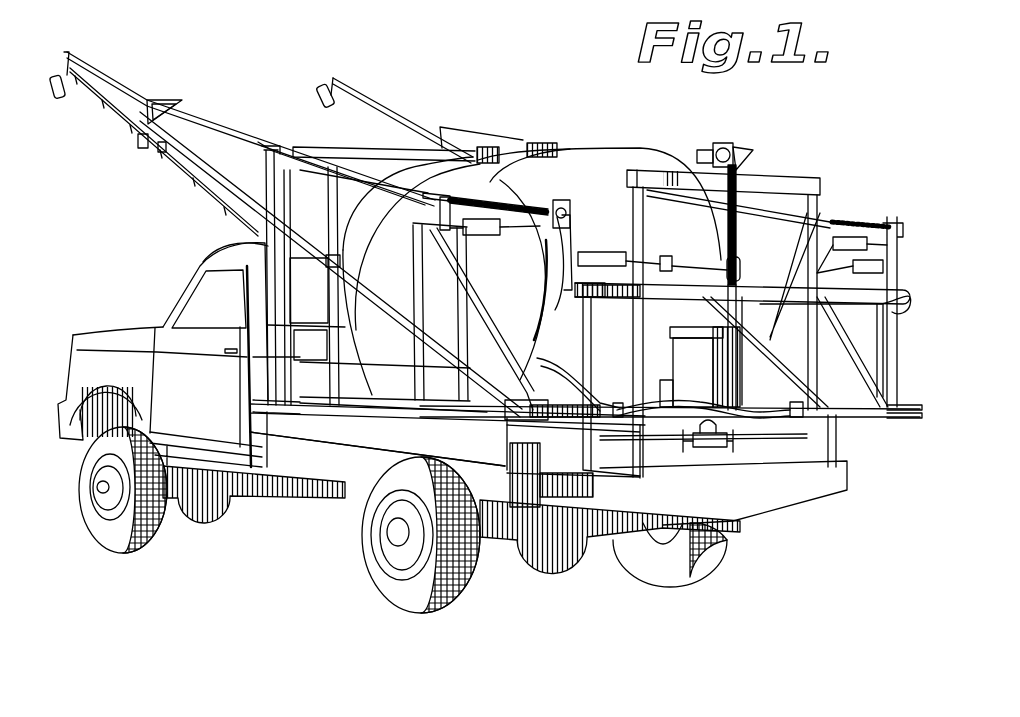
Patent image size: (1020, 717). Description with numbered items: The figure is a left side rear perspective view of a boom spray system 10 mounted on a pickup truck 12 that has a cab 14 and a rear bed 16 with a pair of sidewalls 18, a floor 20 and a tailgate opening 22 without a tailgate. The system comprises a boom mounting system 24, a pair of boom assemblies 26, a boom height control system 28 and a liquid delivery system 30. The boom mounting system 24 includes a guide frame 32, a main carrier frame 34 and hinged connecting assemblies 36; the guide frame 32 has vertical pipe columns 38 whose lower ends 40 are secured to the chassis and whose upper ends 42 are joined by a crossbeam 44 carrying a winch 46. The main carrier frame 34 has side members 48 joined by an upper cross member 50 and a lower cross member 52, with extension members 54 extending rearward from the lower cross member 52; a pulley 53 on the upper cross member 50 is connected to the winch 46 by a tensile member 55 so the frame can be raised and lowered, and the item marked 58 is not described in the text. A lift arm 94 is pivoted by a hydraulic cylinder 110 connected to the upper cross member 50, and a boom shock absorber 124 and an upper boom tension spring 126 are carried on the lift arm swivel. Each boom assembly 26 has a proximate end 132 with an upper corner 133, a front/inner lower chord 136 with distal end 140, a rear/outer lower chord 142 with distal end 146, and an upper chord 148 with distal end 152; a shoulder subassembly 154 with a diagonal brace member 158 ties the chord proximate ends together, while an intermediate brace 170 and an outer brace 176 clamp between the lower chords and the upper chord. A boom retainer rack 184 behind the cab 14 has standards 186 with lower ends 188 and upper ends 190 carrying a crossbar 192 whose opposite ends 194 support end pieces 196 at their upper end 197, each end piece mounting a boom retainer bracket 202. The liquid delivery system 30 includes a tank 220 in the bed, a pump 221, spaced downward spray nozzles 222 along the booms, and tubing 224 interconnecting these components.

The boom spray system 10 is at (774, 118).
The pickup truck 12 is at (78, 337).
The cab 14 is at (217, 247).
The rear bed 16 is at (323, 434).
The sidewalls 18 is at (385, 393).
The floor 20 is at (432, 407).
The tailgate opening 22 is at (511, 372).
The boom mounting system 24 is at (507, 460).
The boom assemblies 26 is at (76, 50).
The boom height control system 28 is at (126, 141).
The liquid delivery system 30 is at (643, 151).
The guide frame 32 is at (822, 182).
The main carrier frame 34 is at (882, 308).
The hinged connecting assemblies 36 is at (887, 206).
The pipe columns 38 is at (807, 448).
The lower ends 40 is at (812, 470).
The upper ends 42 is at (824, 201).
The crossbeam 44 is at (782, 178).
The winch 46 is at (725, 142).
The side members 48 is at (584, 364).
The upper cross member 50 is at (765, 288).
The lower cross member 52 is at (850, 418).
The pulley 53 is at (727, 262).
The extension members 54 is at (616, 430).
The tensile member 55 is at (727, 207).
The foot bracket 58 is at (912, 414).
The lift arm 94 is at (572, 211).
The hydraulic cylinder 110 is at (626, 258).
The boom shock absorber 124 is at (480, 234).
The upper boom tension spring 126 is at (512, 203).
The proximate end 132 is at (484, 314).
The upper corner 133 is at (463, 178).
The front/inner lower chord 136 is at (327, 307).
The distal end 140 is at (185, 107).
The rear/outer lower chord 142 is at (181, 170).
The distal end 146 is at (92, 72).
The upper chord 148 is at (228, 122).
The distal end 152 is at (150, 102).
The shoulder subassembly 154 is at (420, 256).
The diagonal brace member 158 is at (468, 278).
The intermediate brace 170 is at (268, 173).
The outer brace 176 is at (192, 90).
The boom retainer rack 184 is at (372, 145).
The standards 186 is at (352, 212).
The lower ends 188 is at (336, 348).
The upper ends 190 is at (388, 183).
The crossbar 192 is at (410, 132).
The opposite ends 194 is at (264, 150).
The end pieces 196 is at (252, 214).
The upper end 197 is at (262, 146).
The boom retainer bracket 202 is at (340, 262).
The tank 220 is at (600, 148).
The pump 221 is at (697, 382).
The spray nozzles 222 is at (162, 150).
The tubing 224 is at (765, 408).